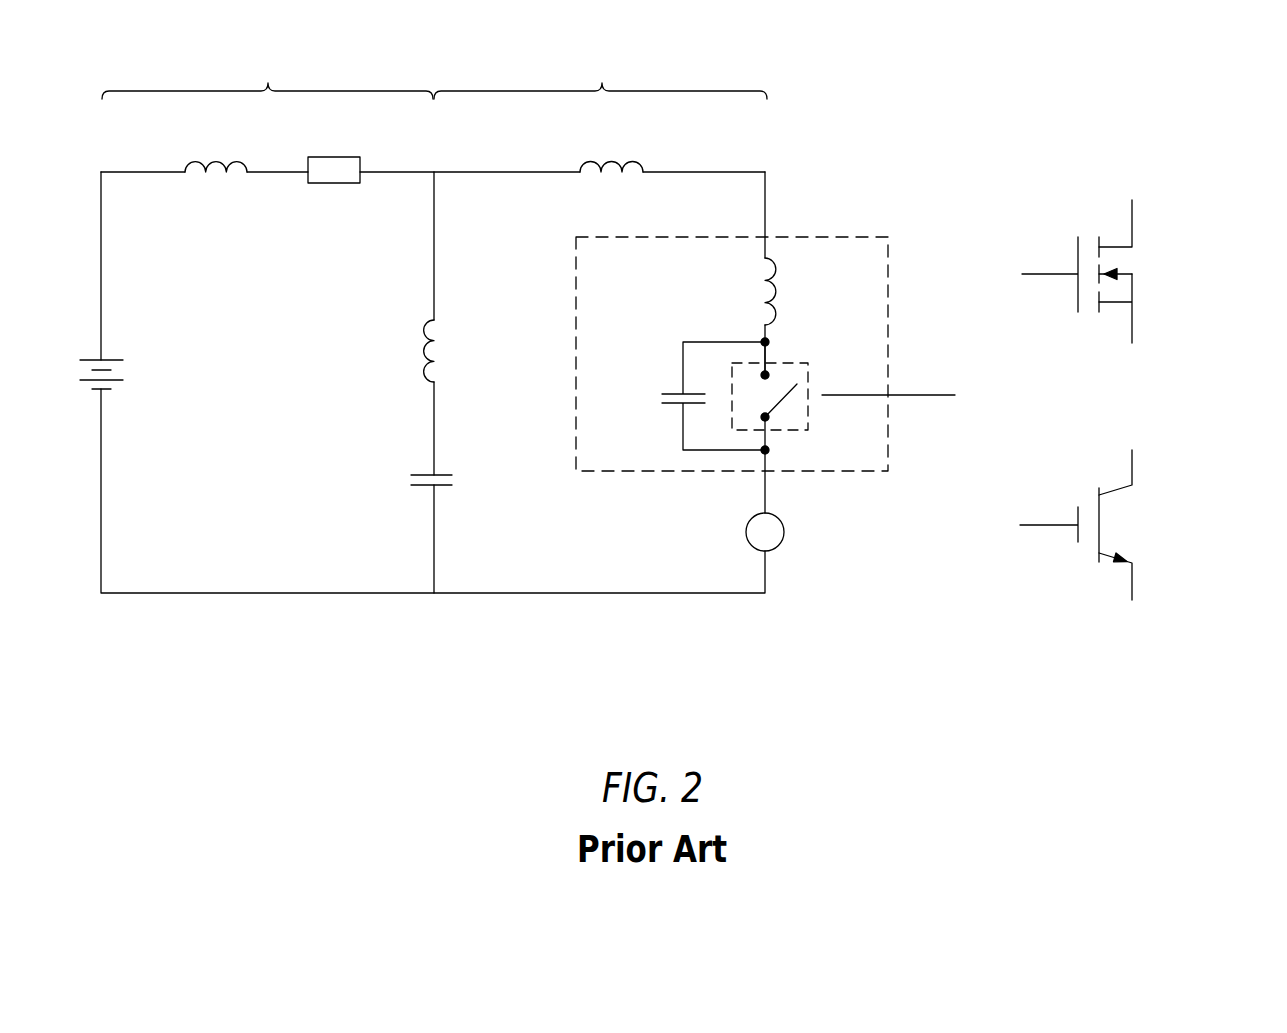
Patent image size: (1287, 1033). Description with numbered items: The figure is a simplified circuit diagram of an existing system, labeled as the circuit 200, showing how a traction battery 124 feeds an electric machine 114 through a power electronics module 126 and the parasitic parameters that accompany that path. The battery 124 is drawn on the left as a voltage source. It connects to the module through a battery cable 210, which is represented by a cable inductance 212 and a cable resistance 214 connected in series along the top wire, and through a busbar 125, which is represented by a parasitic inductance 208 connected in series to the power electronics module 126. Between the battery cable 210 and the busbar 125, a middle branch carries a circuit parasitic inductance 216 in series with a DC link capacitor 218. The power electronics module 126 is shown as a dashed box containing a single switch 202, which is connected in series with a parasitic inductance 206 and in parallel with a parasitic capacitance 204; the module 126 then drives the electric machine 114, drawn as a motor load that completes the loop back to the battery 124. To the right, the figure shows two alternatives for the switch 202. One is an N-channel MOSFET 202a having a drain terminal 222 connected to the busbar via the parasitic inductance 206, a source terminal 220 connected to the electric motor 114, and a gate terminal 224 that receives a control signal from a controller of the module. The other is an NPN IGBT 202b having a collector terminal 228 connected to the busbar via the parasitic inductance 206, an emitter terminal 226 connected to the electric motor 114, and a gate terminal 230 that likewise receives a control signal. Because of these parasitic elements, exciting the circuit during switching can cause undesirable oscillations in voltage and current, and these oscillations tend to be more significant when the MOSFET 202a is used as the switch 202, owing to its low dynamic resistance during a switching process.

The circuit 200 is at (672, 728).
The battery cable 210 is at (232, 65).
The busbar 125 is at (555, 65).
The cable inductance L_cable 212 is at (216, 158).
The cable resistance R_Cable 214 is at (332, 157).
The parasitic inductance L_Bus 208 is at (612, 158).
The traction battery 124 is at (90, 358).
The circuit parasitic inductance L_Para 216 is at (418, 352).
The DC link capacitor C_Link 218 is at (410, 478).
The power electronics module 126 is at (893, 261).
The parasitic inductance L_Module 206 is at (782, 284).
The parasitic capacitance C_Module 204 is at (672, 388).
The switch 202 is at (785, 400).
The electric machine 114 is at (786, 532).
The MOSFET 202a is at (1144, 252).
The drain terminal 222 is at (1123, 217).
The gate terminal 224 is at (1045, 268).
The source terminal 220 is at (1125, 323).
The IGBT 202b is at (1130, 548).
The collector terminal 228 is at (1125, 470).
The gate terminal 230 is at (1045, 528).
The emitter terminal 226 is at (1122, 572).